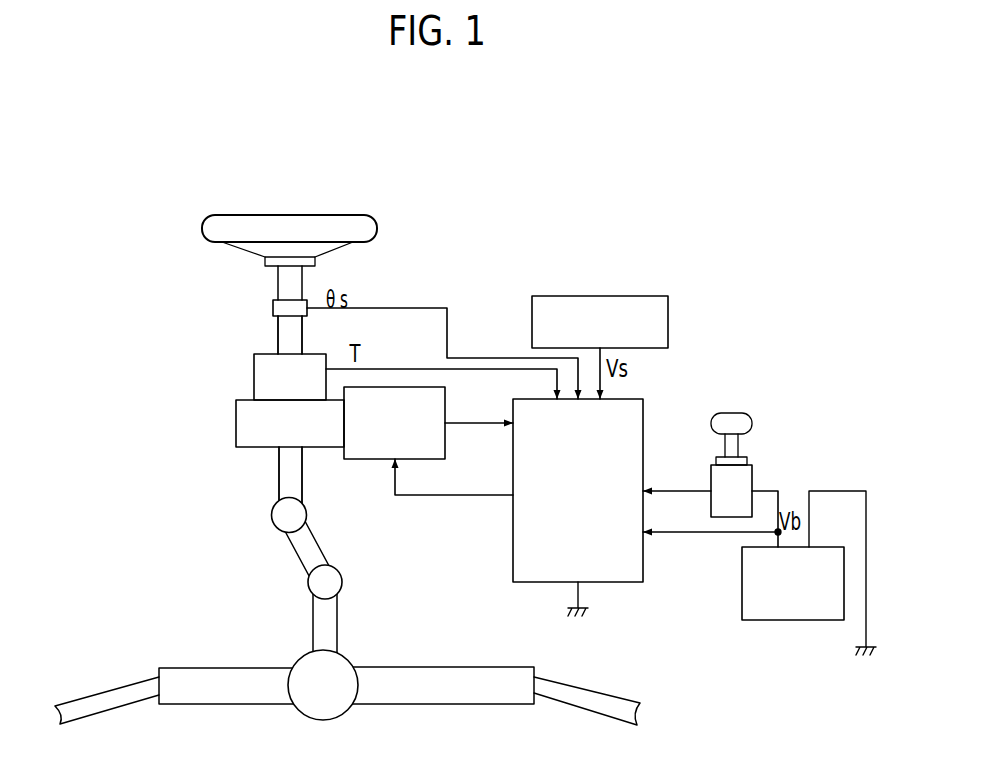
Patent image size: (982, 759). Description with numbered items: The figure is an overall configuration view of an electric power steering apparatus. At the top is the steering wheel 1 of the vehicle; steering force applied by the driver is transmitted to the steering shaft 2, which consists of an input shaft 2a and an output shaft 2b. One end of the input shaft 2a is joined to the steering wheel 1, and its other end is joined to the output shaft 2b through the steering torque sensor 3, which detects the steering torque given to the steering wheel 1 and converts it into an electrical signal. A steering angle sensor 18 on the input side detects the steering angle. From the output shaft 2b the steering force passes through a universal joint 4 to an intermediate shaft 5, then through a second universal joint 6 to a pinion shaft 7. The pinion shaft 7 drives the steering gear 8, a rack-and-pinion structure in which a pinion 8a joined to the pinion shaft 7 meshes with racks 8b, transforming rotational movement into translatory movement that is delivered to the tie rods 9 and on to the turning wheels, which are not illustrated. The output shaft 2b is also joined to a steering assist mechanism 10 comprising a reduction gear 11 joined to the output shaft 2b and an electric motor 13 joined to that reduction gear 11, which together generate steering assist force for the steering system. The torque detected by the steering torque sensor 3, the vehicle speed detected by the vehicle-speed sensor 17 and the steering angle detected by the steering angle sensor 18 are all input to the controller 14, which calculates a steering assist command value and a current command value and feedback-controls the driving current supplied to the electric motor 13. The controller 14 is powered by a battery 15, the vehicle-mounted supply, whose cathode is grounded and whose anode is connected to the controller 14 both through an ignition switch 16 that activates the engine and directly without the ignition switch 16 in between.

The steering wheel 1 is at (298, 216).
The steering shaft 2 is at (262, 283).
The input shaft 2a is at (283, 343).
The output shaft 2b is at (279, 480).
The steering torque sensor 3 is at (254, 372).
The universal joint 4 is at (271, 515).
The intermediate shaft 5 is at (298, 553).
The universal joint 6 is at (307, 582).
The pinion shaft 7 is at (313, 615).
The steering gear 8 is at (363, 640).
The pinion 8a is at (303, 660).
The racks 8b is at (448, 667).
The tie rods 9 is at (118, 685).
The steering assist mechanism 10 is at (228, 390).
The reduction gear 11 is at (236, 422).
The electric motor 13 is at (448, 407).
The controller 14 is at (643, 415).
The battery 15 is at (793, 620).
The ignition switch 16 is at (752, 472).
The vehicle-speed sensor 17 is at (568, 296).
The steering angle sensor 18 is at (273, 307).